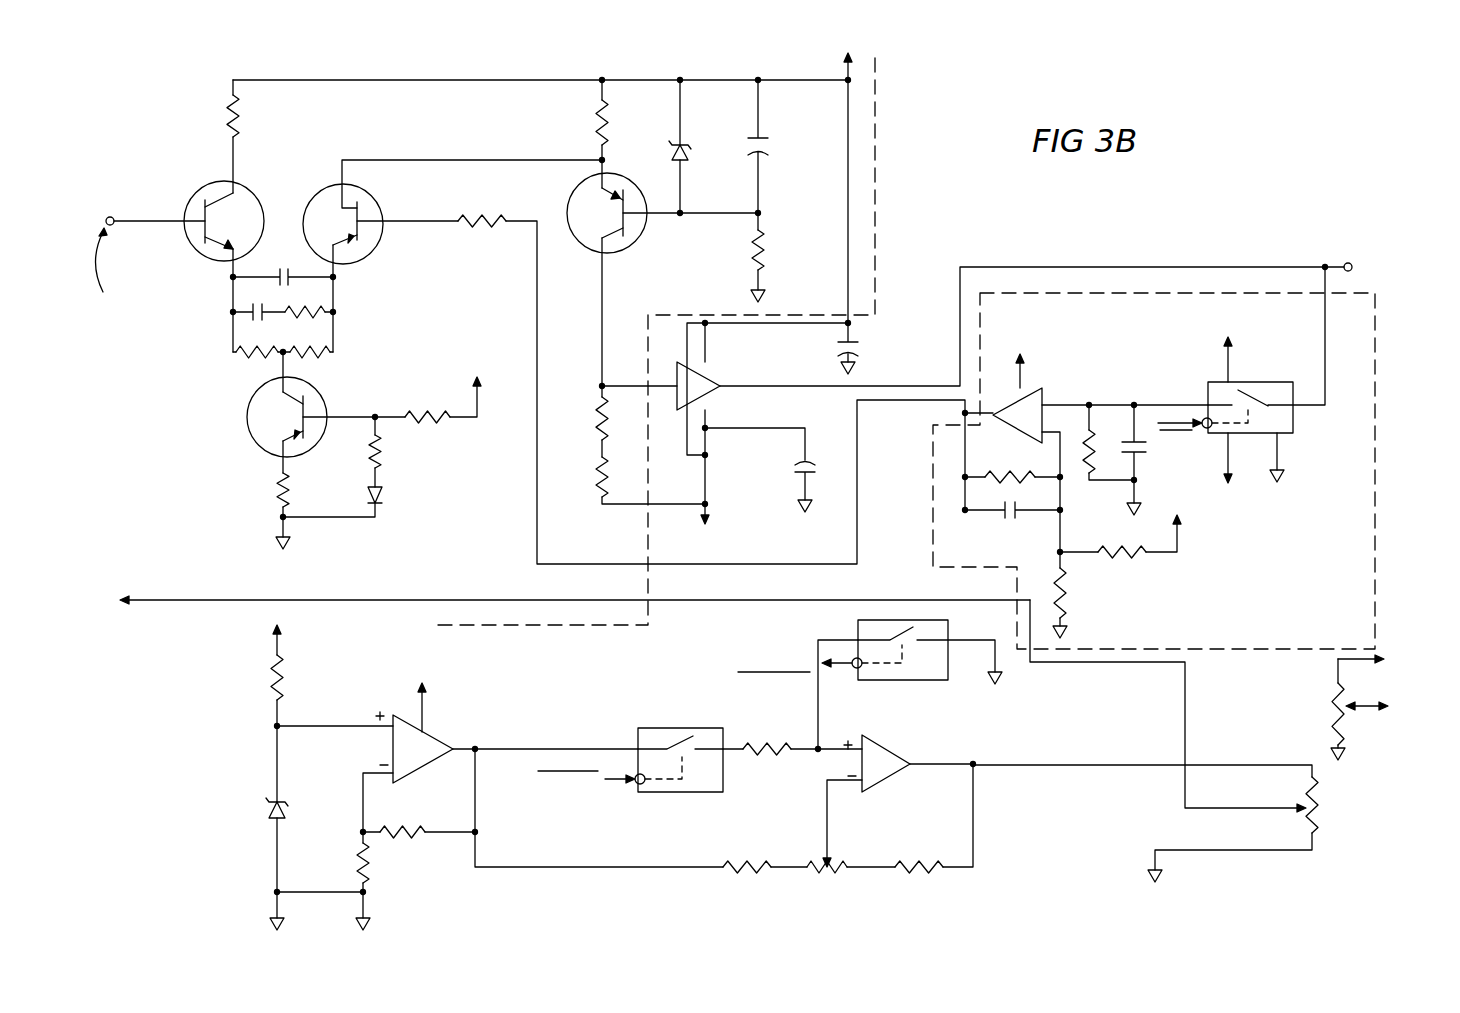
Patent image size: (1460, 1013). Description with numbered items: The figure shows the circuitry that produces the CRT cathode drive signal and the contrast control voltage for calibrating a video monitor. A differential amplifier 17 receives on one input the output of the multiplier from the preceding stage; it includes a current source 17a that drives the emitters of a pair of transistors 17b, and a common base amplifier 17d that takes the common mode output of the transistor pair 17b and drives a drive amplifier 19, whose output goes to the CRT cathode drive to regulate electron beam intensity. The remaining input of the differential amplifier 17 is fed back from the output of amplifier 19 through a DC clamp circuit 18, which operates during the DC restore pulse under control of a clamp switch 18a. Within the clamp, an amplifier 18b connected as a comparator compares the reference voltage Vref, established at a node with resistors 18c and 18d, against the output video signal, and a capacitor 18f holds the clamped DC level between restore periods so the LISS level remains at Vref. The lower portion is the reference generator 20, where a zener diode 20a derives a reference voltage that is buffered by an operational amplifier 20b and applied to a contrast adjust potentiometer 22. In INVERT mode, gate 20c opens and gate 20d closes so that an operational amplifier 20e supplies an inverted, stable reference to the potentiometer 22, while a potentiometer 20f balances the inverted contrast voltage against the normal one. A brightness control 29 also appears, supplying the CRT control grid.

The differential amplifier 17 is at (730, 54).
The current source 17a is at (305, 455).
The pair of transistors 17b is at (287, 196).
The common base amplifier 17d is at (641, 226).
The DC clamp circuit 18 is at (1275, 578).
The DC clamp switch 18a is at (1293, 425).
The amplifier 18b is at (1045, 386).
The resistor 18c is at (1063, 602).
The resistor 18d is at (1113, 562).
The capacitor 18f is at (1138, 454).
The drive amplifier 19 is at (716, 380).
The reference generator 20 is at (726, 934).
The zener diode 20a is at (266, 808).
The operational amplifier 20b is at (420, 764).
The gate 20c is at (678, 793).
The gate 20d is at (885, 680).
The operational amplifier 20e is at (877, 740).
The potentiometer 20f is at (830, 856).
The contrast adjust potentiometer 22 is at (1322, 797).
The brightness control 29 is at (777, 695).